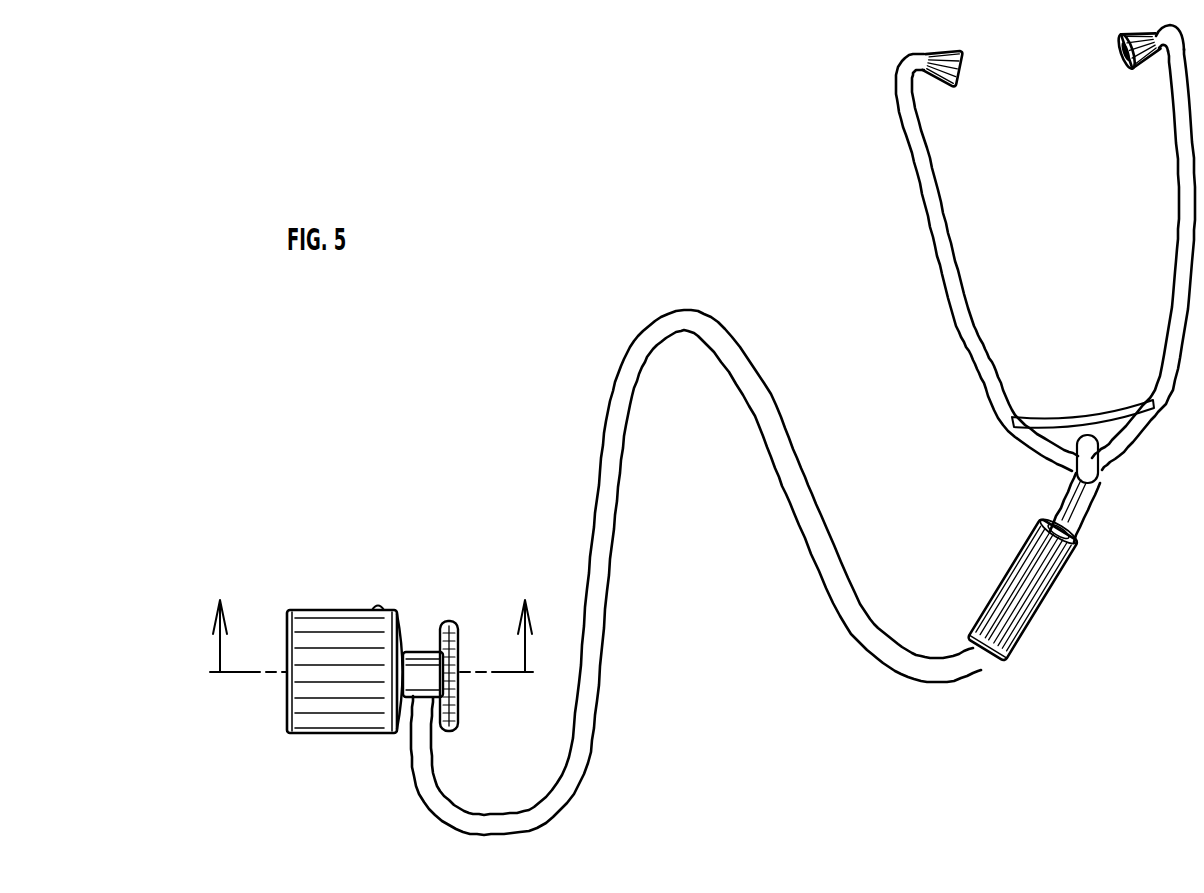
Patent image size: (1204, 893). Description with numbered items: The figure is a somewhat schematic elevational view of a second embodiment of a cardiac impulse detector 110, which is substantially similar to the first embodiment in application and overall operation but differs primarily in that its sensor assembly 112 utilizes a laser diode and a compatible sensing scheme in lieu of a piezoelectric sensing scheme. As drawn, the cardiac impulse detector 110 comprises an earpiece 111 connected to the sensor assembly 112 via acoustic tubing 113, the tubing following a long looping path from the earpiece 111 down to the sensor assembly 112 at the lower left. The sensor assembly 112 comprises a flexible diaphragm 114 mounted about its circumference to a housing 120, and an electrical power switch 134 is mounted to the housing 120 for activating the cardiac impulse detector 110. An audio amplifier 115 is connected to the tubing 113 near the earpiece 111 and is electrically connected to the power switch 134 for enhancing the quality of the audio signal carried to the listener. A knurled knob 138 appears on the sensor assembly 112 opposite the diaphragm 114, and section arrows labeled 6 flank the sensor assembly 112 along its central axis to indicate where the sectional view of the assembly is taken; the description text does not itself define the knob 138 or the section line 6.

The cardiac impulse detector 110 is at (648, 276).
The earpiece 111 is at (903, 58).
The sensor assembly 112 is at (336, 583).
The acoustic tubing 113 is at (598, 714).
The flexible diaphragm 114 is at (285, 706).
The audio amplifier 115 is at (988, 598).
The housing 120 is at (342, 735).
The electrical power switch 134 is at (375, 606).
The adjustment knob 138 is at (458, 687).
The section line 6- 6 is at (371, 618).